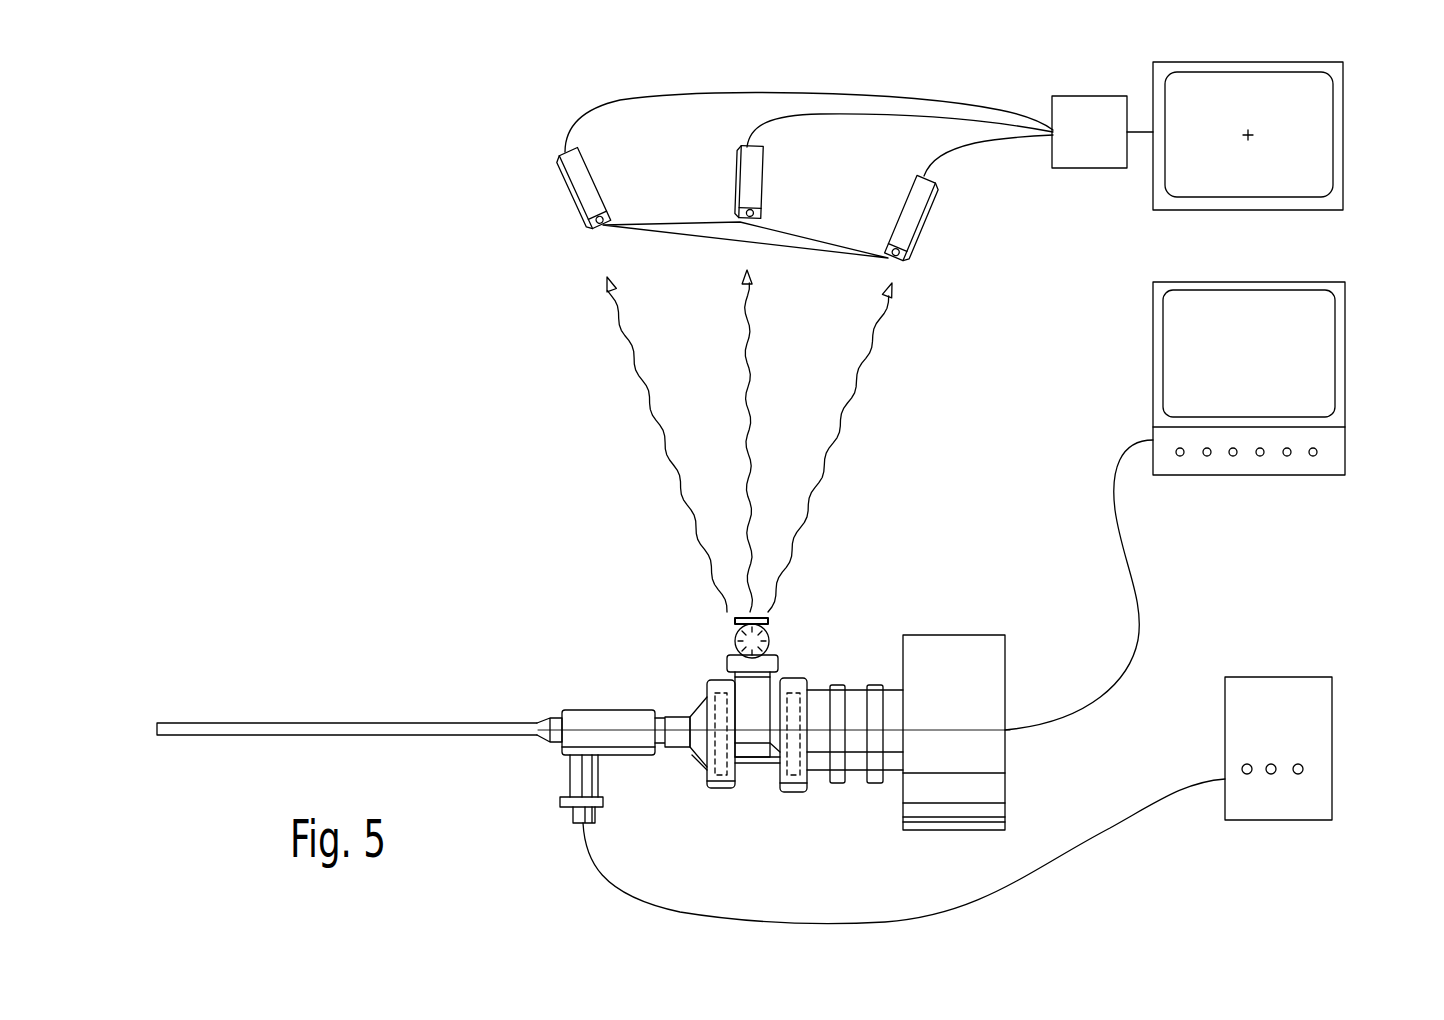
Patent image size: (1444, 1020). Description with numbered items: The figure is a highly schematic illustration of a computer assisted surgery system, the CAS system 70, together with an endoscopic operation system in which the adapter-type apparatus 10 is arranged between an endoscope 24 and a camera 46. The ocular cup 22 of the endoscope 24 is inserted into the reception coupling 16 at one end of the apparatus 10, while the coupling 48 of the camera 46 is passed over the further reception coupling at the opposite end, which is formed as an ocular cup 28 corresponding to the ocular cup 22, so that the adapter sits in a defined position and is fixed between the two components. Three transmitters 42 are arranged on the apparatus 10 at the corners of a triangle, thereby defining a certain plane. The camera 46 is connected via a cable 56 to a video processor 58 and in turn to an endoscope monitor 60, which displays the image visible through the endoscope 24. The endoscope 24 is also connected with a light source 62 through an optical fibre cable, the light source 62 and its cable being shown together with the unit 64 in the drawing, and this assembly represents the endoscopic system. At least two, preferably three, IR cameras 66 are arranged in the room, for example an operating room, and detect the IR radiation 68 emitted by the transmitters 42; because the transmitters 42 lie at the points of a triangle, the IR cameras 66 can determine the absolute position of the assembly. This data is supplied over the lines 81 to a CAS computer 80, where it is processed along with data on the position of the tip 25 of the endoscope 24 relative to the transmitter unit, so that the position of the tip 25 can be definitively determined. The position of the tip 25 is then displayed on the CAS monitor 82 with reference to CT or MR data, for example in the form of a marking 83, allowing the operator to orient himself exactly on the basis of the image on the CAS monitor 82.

The apparatus 10 is at (800, 655).
The reception coupling 16 is at (716, 790).
The ocular cup 22 is at (692, 757).
The endoscope 24 is at (471, 690).
The tip 25 is at (157, 723).
The ocular cup 28 is at (776, 765).
The transmitters 42 is at (733, 620).
The camera 46 is at (960, 620).
The coupling 48 is at (797, 792).
The cable 56 is at (1141, 590).
The video processor 58 is at (1260, 463).
The endoscope monitor 60 is at (1327, 364).
The light source 62 is at (1097, 838).
The light source 64 is at (1313, 733).
The IR cameras 66 is at (585, 175).
The signal beams 68 is at (635, 348).
The CAS system 70 is at (523, 193).
The CAS computer 80 is at (1087, 155).
The lines 81 is at (708, 92).
The CAS monitor 82 is at (1338, 178).
The marking 83 is at (1252, 138).